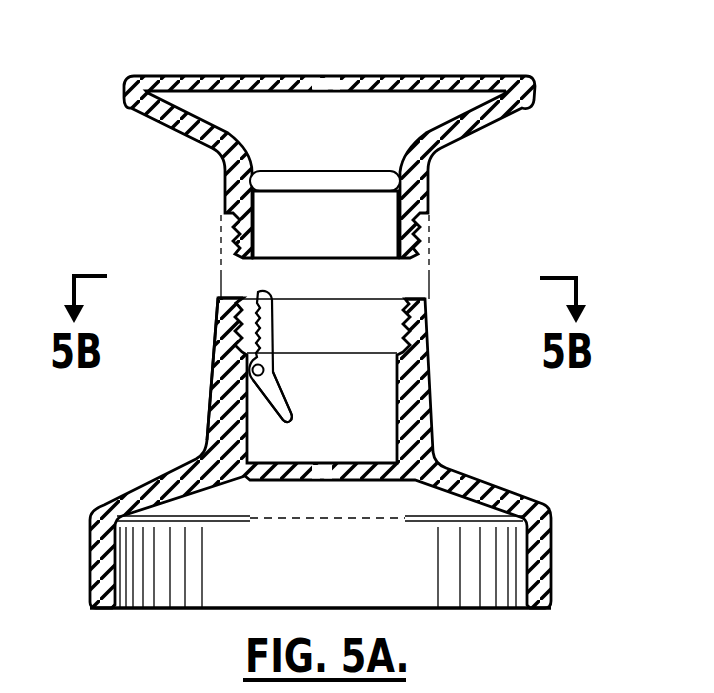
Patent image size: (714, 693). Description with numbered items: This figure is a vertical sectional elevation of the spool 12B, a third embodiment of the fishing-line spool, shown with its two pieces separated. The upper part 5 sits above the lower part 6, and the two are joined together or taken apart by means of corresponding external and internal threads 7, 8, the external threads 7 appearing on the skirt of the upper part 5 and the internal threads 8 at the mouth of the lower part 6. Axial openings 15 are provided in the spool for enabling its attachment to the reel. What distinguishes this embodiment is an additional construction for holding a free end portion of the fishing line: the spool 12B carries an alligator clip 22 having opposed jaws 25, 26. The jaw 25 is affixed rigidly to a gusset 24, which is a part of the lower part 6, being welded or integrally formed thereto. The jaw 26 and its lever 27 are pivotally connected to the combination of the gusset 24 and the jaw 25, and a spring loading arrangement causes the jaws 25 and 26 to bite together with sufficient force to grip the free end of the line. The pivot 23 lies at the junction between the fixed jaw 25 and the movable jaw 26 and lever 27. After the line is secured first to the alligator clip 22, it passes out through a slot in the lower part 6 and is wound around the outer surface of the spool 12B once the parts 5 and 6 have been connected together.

The spool 12B is at (140, 45).
The upper part 5 is at (536, 78).
The lower part 6 is at (92, 536).
The external threads 7 is at (424, 238).
The internal threads 8 is at (245, 300).
The axial openings 15 is at (325, 70).
The alligator clip 22 is at (260, 292).
The pivot 23 is at (265, 370).
The gusset 24 is at (243, 413).
The jaw 25 is at (240, 337).
The jaw 26 is at (274, 312).
The lever 27 is at (291, 400).